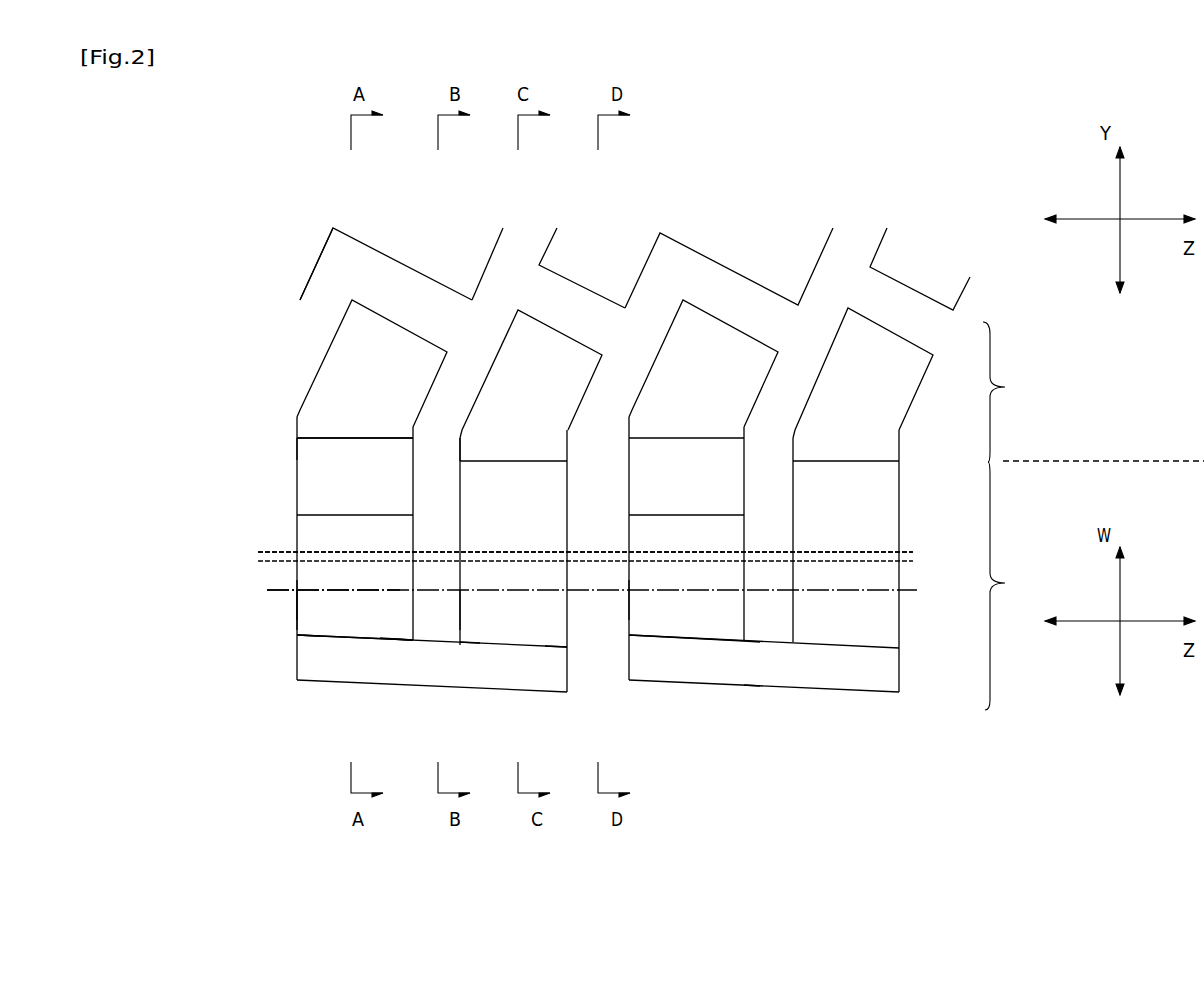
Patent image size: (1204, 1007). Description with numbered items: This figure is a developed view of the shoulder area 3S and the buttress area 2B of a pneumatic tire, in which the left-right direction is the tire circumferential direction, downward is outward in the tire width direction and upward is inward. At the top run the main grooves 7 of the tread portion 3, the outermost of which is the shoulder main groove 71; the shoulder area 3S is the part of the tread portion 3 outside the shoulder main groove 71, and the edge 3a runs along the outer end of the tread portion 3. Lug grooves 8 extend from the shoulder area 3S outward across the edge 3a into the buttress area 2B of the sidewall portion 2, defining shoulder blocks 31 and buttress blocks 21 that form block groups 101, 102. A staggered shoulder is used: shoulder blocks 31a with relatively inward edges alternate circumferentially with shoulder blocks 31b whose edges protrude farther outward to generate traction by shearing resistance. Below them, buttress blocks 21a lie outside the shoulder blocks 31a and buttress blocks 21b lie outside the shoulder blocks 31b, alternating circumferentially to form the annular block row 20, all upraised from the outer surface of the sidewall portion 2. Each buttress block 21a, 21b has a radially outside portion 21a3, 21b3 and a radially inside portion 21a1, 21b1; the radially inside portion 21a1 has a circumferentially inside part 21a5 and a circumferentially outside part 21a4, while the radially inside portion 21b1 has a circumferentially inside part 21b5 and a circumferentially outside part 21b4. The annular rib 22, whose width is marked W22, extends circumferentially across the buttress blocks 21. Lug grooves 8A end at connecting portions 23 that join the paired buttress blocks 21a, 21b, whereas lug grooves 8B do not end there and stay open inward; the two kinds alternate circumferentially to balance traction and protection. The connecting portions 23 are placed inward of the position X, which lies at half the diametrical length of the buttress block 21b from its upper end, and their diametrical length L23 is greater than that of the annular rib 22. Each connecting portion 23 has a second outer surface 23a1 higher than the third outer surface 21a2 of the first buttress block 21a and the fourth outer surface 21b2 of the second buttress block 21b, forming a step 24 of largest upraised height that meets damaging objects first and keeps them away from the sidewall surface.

The block group 101 is at (372, 358).
The block group 102 is at (730, 352).
The main groove 7 is at (338, 273).
The shoulder main groove 71 is at (357, 247).
The tread portion 3 is at (297, 317).
The edge 3a is at (332, 437).
The shoulder area 3S is at (1007, 392).
The shoulder block 31 is at (449, 303).
The shoulder block 31a is at (380, 315).
The shoulder block 31b is at (547, 317).
The lug groove 8 is at (559, 282).
The lug groove 8A is at (450, 392).
The lug groove 8B is at (613, 397).
The sidewall portion 2 is at (317, 747).
The buttress area 2B is at (1008, 586).
The annular block row 20 is at (265, 597).
The buttress block 21 is at (560, 574).
The first buttress block 21a is at (297, 610).
The radially inside portion 21a1 is at (377, 620).
The third outer surface 21a2 is at (337, 603).
The radially outside portion 21a3 is at (332, 455).
The circumferentially outside part 21a4 is at (303, 625).
The circumferentially inside part 21a5 is at (375, 665).
The second buttress block 21b is at (567, 620).
The radially inside portion 21b1 is at (503, 620).
The fourth outer surface 21b2 is at (627, 600).
The radially outside portion 21b3 is at (463, 420).
The circumferentially outside part 21b4 is at (558, 625).
The circumferentially inside part 21b5 is at (470, 632).
The annular rib 22 is at (592, 550).
The width of slit W22 is at (269, 530).
The connecting portion 23 is at (432, 690).
The second outer surface 23a1 is at (407, 623).
The length of connecting portion L23 is at (749, 643).
The step 24 is at (360, 672).
The position X is at (601, 590).